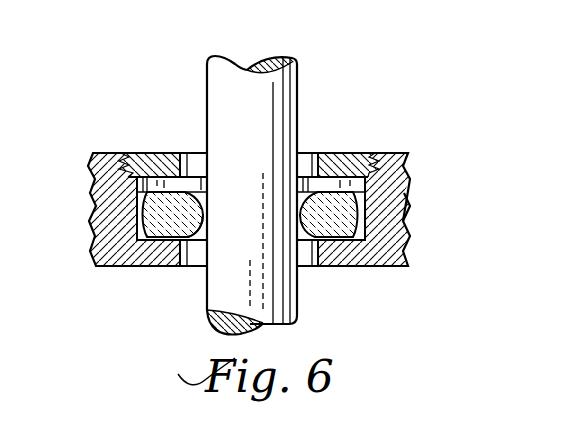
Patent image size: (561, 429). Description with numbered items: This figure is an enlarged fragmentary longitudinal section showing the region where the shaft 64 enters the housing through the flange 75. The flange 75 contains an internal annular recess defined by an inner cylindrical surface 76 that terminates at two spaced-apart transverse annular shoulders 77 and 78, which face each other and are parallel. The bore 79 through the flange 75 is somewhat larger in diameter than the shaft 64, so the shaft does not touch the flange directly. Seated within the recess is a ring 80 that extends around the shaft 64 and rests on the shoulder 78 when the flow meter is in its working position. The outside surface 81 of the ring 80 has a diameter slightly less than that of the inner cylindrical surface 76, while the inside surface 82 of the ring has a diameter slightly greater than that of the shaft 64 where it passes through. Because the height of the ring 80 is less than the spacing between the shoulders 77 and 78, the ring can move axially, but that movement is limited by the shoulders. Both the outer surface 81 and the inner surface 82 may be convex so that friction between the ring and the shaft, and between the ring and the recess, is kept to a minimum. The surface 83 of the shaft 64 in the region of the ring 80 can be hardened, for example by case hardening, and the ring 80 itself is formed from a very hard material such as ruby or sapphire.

The shaft 64 is at (284, 192).
The surface of the shaft 83 is at (266, 136).
The flange 75 is at (390, 266).
The inner cylindrical surface 76 is at (367, 208).
The transverse annular shoulder 77 is at (353, 175).
The transverse annular shoulder 78 is at (327, 267).
The bore 79 is at (195, 158).
The ring 80 is at (165, 227).
The outside surface of the ring 81 is at (143, 220).
The inside surface of the ring 82 is at (200, 223).